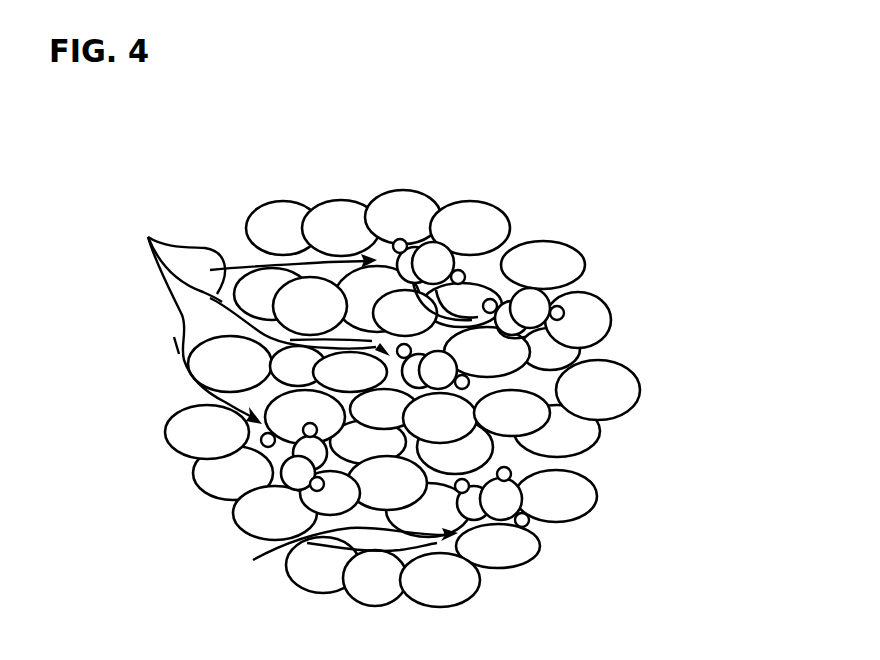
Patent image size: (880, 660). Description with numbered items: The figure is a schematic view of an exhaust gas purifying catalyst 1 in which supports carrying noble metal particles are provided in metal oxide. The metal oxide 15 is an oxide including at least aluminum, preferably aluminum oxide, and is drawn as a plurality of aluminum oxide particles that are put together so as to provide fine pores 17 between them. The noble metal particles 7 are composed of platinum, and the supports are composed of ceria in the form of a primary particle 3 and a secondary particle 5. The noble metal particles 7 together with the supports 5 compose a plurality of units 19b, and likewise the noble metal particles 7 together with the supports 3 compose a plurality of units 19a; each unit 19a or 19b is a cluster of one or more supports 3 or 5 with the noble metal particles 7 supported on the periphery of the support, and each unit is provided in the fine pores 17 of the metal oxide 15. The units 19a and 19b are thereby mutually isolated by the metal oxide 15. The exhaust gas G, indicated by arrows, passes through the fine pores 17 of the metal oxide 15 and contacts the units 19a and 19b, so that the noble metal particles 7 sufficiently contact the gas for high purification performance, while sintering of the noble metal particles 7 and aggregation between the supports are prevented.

The exhaust gas purifying catalyst 1 is at (509, 151).
The support (primary particle) 3 is at (435, 250).
The support (secondary particle) 5 is at (508, 496).
The noble metal particle 7 is at (392, 238).
The metal oxide 15 is at (618, 393).
The fine pore 17 is at (520, 378).
The unit 19a is at (423, 135).
The unit 19b is at (655, 458).
The exhaust gas G is at (298, 383).